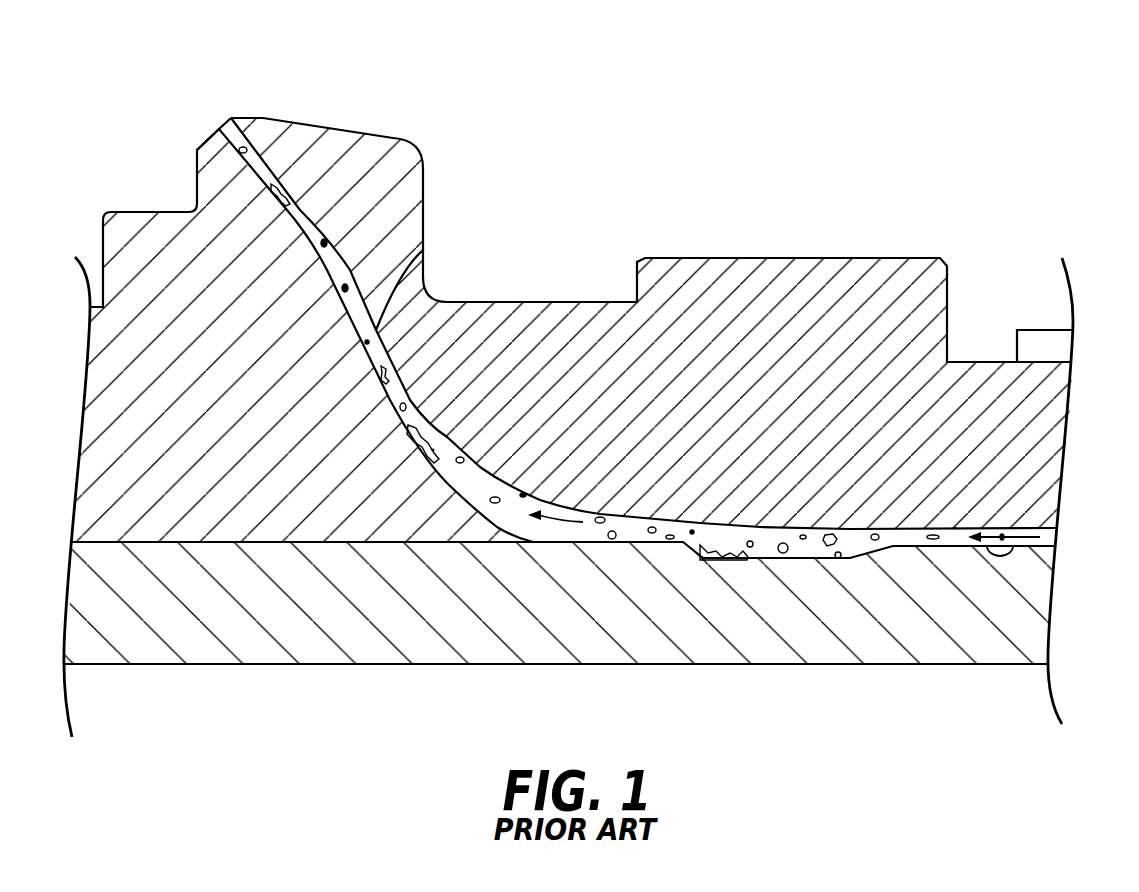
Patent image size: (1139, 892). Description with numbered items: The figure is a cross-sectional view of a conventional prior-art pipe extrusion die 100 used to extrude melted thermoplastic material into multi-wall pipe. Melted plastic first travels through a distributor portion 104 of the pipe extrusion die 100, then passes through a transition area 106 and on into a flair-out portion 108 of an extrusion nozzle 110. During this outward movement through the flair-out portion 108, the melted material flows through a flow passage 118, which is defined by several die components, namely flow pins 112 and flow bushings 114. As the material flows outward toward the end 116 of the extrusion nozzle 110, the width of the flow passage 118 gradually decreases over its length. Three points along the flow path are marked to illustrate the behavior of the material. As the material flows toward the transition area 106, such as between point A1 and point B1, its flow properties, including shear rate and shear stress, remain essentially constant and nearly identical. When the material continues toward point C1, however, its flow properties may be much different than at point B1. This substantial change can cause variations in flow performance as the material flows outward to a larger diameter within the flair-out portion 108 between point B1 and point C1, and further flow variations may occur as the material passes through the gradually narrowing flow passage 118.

The pipe extrusion die 100 is at (763, 190).
The distributor portion 104 is at (808, 550).
The transition area 106 is at (642, 535).
The flair-out portion 108 is at (580, 522).
The extrusion nozzle 110 is at (424, 250).
The flow pins 112 is at (210, 157).
The flow bushings 114 is at (293, 143).
The end of the extrusion nozzle 116 is at (218, 128).
The flow passage 118 is at (493, 497).
The point A1 is at (1053, 537).
The point B1 is at (955, 527).
The point C1 is at (433, 450).